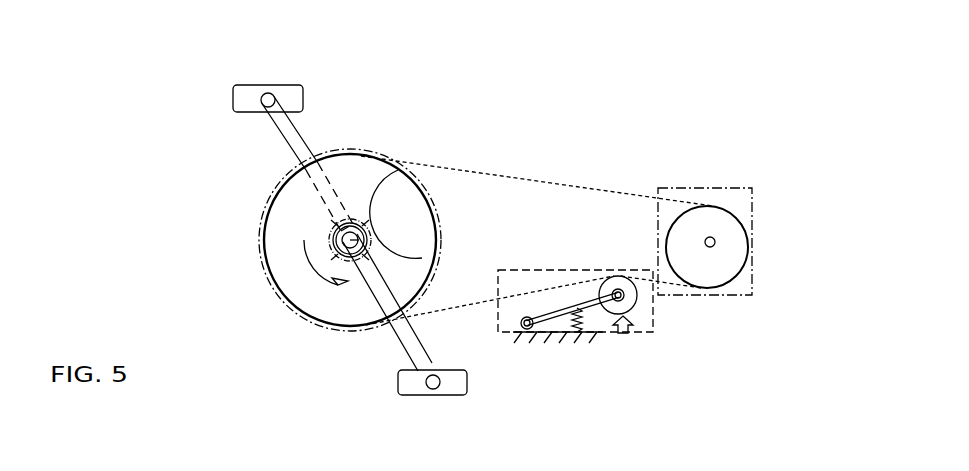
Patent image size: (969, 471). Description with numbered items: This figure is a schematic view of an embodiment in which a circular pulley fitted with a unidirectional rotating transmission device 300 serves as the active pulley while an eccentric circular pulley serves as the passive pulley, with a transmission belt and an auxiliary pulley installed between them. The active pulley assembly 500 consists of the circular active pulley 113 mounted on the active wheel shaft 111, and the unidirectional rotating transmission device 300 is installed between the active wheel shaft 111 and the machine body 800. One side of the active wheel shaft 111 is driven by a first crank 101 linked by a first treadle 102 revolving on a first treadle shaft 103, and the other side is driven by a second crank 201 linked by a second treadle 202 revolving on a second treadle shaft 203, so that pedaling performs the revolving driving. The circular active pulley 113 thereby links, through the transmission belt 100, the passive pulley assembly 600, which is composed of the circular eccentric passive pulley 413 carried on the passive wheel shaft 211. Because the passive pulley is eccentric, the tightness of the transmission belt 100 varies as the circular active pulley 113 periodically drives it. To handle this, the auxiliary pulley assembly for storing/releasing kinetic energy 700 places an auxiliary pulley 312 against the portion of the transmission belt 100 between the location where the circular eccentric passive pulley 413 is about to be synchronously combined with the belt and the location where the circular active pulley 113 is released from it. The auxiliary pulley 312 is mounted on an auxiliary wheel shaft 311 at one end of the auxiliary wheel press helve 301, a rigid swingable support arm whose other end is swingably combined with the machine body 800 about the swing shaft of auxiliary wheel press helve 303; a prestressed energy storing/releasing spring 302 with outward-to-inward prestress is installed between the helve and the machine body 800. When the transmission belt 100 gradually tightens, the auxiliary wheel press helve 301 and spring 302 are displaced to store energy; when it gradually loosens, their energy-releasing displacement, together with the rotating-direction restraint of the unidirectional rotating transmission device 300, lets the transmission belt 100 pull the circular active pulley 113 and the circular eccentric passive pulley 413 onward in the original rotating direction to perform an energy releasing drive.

The transmission belt 100 is at (512, 180).
The first crank 101 is at (293, 143).
The first treadle 102 is at (290, 92).
The first treadle shaft 103 is at (262, 98).
The active wheel shaft 111 is at (397, 168).
The circular active pulley 113 is at (283, 296).
The second crank 201 is at (407, 345).
The second treadle 202 is at (412, 385).
The second treadle shaft 203 is at (443, 381).
The passive wheel shaft 211 is at (720, 238).
The unidirectional rotating transmission device 300 is at (334, 234).
The auxiliary wheel press helve 301 is at (558, 310).
The prestressed energy storing/releasing spring 302 is at (587, 320).
The swing shaft of auxiliary wheel press helve 303 is at (525, 318).
The auxiliary wheel shaft 311 is at (621, 291).
The auxiliary pulley 312 is at (637, 303).
The circular eccentric passive pulley 413 is at (743, 269).
The active pulley assembly 500 is at (345, 153).
The passive pulley assembly 600 is at (752, 207).
The auxiliary pulley assembly for storing/releasing kinetic energy 700 is at (510, 270).
The machine body 800 is at (364, 257).